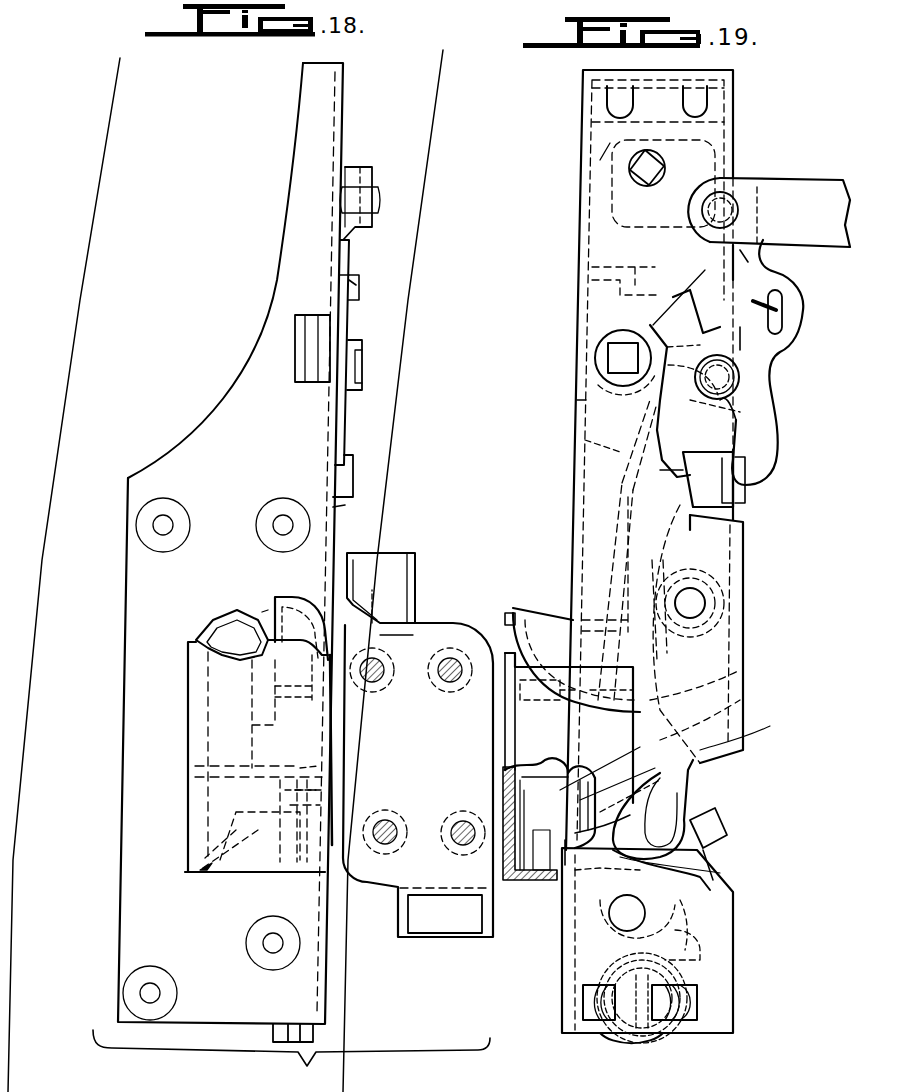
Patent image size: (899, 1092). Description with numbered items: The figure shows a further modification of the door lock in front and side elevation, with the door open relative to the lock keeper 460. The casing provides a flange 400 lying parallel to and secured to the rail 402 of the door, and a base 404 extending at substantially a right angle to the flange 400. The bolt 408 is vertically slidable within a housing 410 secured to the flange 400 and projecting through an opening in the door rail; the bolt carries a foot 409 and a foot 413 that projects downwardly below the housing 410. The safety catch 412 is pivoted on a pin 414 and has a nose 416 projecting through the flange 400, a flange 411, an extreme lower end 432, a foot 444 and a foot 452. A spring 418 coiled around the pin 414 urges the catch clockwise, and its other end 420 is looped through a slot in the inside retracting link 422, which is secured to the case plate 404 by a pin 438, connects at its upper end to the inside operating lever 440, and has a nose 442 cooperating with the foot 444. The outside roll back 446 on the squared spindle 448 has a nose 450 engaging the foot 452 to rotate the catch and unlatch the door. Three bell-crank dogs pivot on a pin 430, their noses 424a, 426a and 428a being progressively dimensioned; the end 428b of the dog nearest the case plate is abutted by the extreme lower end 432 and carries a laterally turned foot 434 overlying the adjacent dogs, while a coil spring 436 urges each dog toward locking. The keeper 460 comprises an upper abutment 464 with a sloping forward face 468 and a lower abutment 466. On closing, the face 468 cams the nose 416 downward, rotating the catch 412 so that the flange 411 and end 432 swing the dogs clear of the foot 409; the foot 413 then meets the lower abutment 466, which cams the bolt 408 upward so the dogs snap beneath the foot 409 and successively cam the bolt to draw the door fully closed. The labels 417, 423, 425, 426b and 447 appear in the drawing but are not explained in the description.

In FIG. 18, the flange 400 is at (266, 483).
In FIG. 19, the flange 400 is at (577, 400).
In FIG. 18, the rail 402 is at (88, 352).
In FIG. 18, the base 404 is at (345, 505).
In FIG. 18, the bolt 408 is at (228, 617).
In FIG. 19, the foot 409 is at (566, 817).
In FIG. 18, the housing 410 is at (190, 700).
In FIG. 19, the flange 411 is at (578, 740).
In FIG. 18, the safety catch 412 is at (268, 610).
In FIG. 19, the safety catch 412 is at (620, 530).
In FIG. 18, the foot 413 is at (222, 893).
In FIG. 19, the pin 414 is at (745, 590).
In FIG. 18, the nose 416 is at (292, 600).
In FIG. 19, the nose 416 is at (532, 585).
In FIG. 19, the latch bolt edge 417 is at (742, 688).
In FIG. 19, the spring 418 is at (742, 640).
In FIG. 18, the other end 420 is at (359, 298).
In FIG. 19, the other end 420 is at (782, 296).
In FIG. 18, the inside retracting link 422 is at (350, 258).
In FIG. 19, the inside retracting link 422 is at (760, 270).
In FIG. 19, the lever arm 423 is at (748, 262).
In FIG. 18, the nose 424a is at (296, 766).
In FIG. 19, the nose 424a is at (655, 768).
In FIG. 19, the cam member 425 is at (672, 496).
In FIG. 18, the nose 426a is at (318, 766).
In FIG. 19, the nose 426a is at (652, 754).
In FIG. 19, the second detent 426b is at (720, 800).
In FIG. 18, the nose 428a is at (322, 780).
In FIG. 19, the nose 428a is at (645, 742).
In FIG. 19, the end 428b is at (720, 845).
In FIG. 19, the pin 430 is at (630, 895).
In FIG. 19, the extreme lower end 432 is at (756, 730).
In FIG. 19, the foot 434 is at (728, 828).
In FIG. 19, the coil spring 436 is at (680, 948).
In FIG. 18, the pin 438 is at (362, 378).
In FIG. 19, the pin 438 is at (740, 377).
In FIG. 18, the inside operating lever 440 is at (372, 178).
In FIG. 19, the inside operating lever 440 is at (785, 190).
In FIG. 19, the nose 442 is at (745, 456).
In FIG. 18, the foot 444 is at (353, 480).
In FIG. 19, the foot 444 is at (745, 495).
In FIG. 19, the outside roll back 446 is at (577, 306).
In FIG. 19, the square drive opening 447 is at (636, 222).
In FIG. 19, the squared spindle 448 is at (612, 347).
In FIG. 19, the nose 450 is at (740, 412).
In FIG. 19, the foot 452 is at (585, 450).
In FIG. 18, the lock keeper 460 is at (443, 600).
In FIG. 18, the upper abutment 464 is at (395, 565).
In FIG. 18, the lower abutment 466 is at (440, 868).
In FIG. 18, the sloping forward face 468 is at (372, 590).